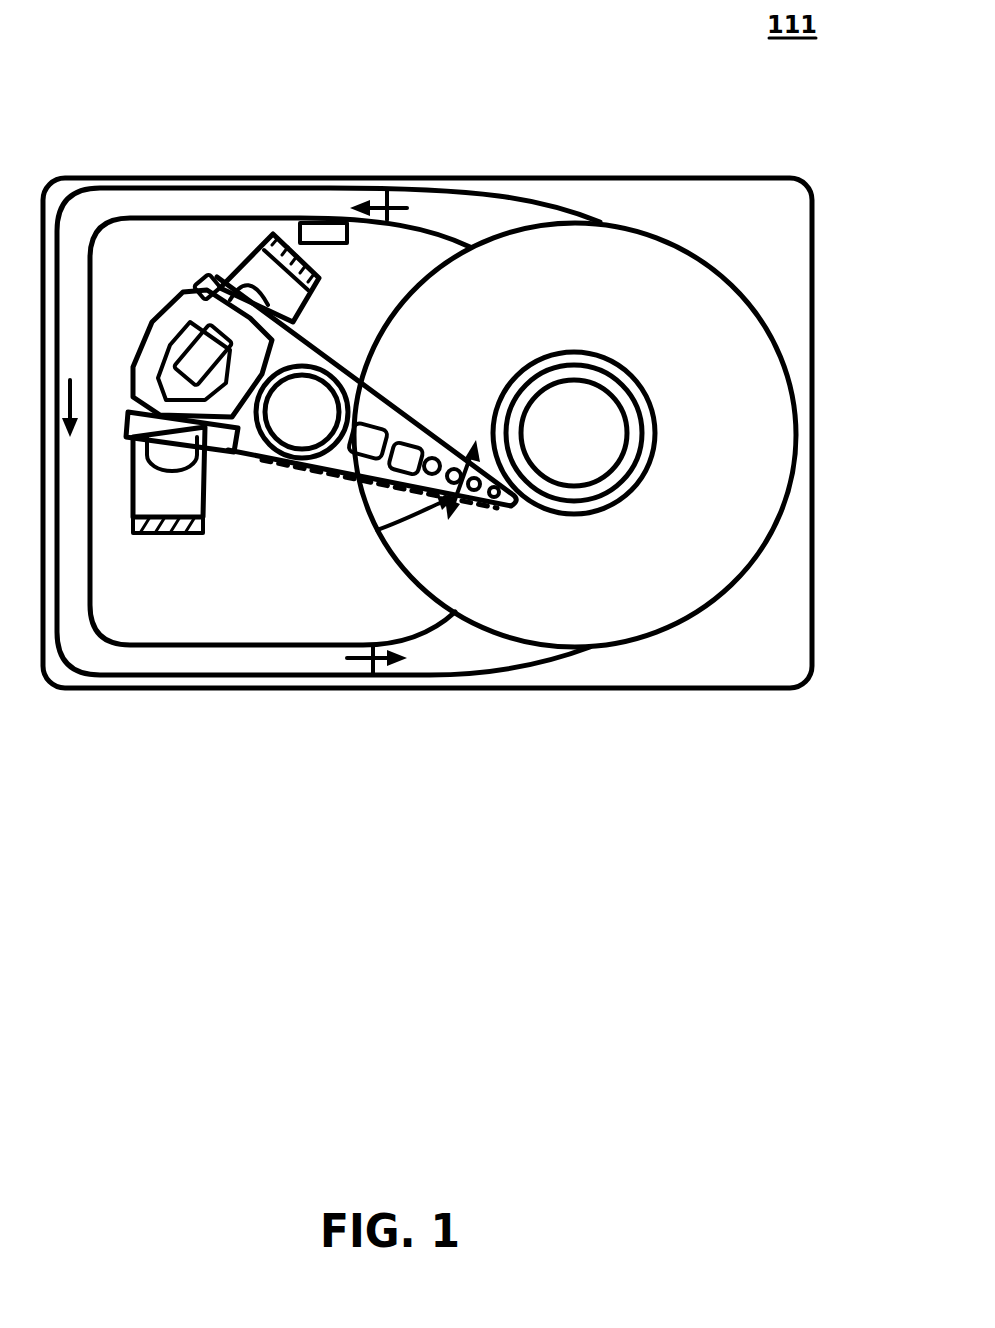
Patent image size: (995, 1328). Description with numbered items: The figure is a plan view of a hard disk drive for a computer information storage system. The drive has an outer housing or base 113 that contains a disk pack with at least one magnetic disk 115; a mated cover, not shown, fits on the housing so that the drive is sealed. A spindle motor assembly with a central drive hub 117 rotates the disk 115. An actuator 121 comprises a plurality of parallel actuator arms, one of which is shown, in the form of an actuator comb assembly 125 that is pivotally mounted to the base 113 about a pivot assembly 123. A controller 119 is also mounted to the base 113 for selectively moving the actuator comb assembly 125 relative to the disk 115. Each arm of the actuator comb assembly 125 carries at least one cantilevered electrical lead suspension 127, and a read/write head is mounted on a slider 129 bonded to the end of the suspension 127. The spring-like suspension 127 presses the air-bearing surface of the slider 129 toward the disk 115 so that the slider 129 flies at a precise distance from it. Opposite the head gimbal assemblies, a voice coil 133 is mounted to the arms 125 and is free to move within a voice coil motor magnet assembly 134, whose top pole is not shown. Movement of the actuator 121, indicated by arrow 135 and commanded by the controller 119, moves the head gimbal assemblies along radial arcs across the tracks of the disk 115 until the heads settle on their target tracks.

The outer housing or base 113 is at (653, 178).
The magnetic disk 115 is at (660, 256).
The central drive hub 117 is at (606, 354).
The controller 119 is at (340, 244).
The actuator 121 is at (220, 558).
The pivot assembly 123 is at (300, 458).
The actuator comb assembly 125 is at (361, 381).
The electrical lead suspension 127 is at (410, 432).
The slider 129 is at (494, 494).
The voice coil 133 is at (163, 316).
The voice coil motor magnet assembly 134 is at (262, 267).
The arrow 135 is at (377, 530).